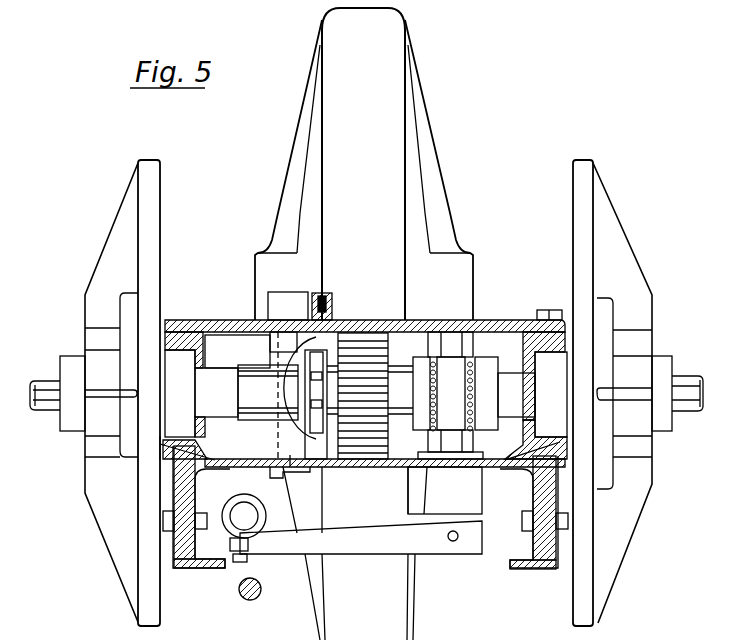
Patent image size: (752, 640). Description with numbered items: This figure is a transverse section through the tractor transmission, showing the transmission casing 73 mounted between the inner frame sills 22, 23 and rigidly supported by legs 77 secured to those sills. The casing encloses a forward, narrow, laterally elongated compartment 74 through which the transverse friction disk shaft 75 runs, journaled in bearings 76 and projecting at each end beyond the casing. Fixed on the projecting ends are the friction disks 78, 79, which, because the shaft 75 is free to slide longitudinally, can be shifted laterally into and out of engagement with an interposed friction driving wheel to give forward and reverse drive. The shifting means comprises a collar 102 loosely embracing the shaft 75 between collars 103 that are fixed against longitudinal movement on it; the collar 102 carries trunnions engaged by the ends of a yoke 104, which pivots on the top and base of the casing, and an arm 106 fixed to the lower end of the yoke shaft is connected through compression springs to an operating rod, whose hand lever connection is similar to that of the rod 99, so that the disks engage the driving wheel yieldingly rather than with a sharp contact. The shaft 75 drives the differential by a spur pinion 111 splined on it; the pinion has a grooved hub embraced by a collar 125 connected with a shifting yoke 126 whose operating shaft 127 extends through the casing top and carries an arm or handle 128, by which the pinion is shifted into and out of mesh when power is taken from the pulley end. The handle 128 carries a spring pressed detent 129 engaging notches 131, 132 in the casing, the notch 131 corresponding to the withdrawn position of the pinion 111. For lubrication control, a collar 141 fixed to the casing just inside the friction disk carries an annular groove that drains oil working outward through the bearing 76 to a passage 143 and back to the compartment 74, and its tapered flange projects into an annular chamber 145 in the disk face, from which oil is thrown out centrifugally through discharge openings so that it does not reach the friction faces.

The transmission casing 73 is at (364, 324).
The forward compartment 74 is at (237, 351).
The friction disk shaft 75 is at (365, 392).
The bearings 76 is at (366, 384).
The legs 77 is at (200, 503).
The friction disk 78 is at (585, 160).
The friction disk 79 is at (156, 160).
The rod 99 is at (241, 603).
The shifting collar 102 is at (455, 394).
The collars 103 is at (487, 364).
The yoke 104 is at (492, 322).
The arm 106 is at (377, 545).
The spur pinion 111 is at (395, 340).
The collar 125 is at (318, 445).
The shifting yoke 126 is at (290, 455).
The operating shaft 127 is at (252, 508).
The arm or handle 128 is at (290, 305).
The spring pressed detent 129 is at (333, 316).
The notch 131 is at (268, 320).
The notch 132 is at (346, 324).
The collar 141 is at (160, 447).
The passage 143 is at (210, 456).
The annular chamber 145 is at (522, 456).
The frame sill 22 is at (536, 570).
The frame sill 23 is at (208, 570).